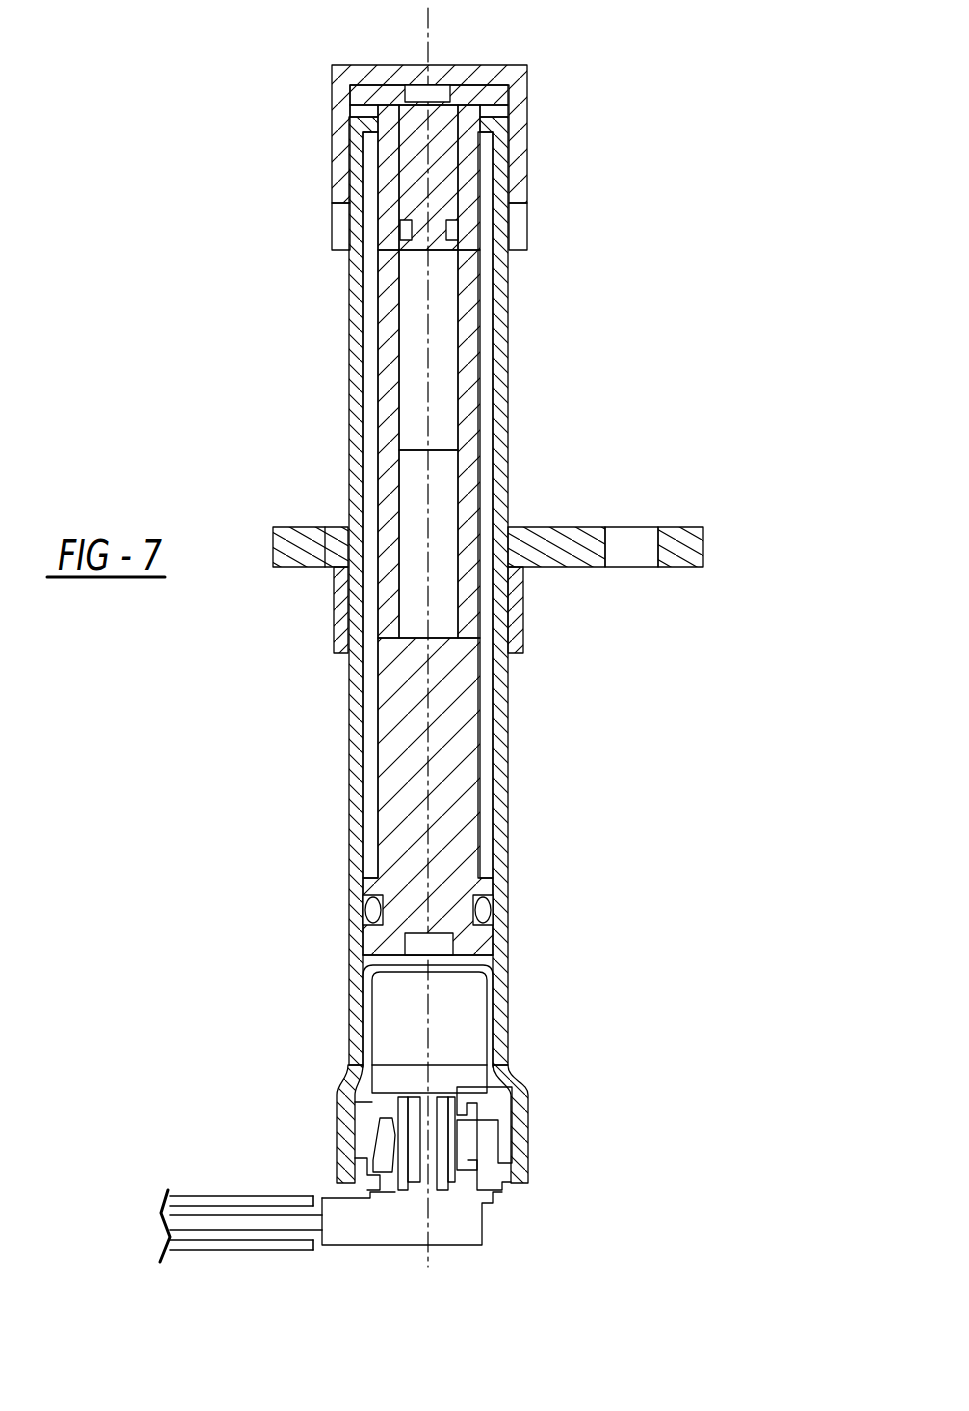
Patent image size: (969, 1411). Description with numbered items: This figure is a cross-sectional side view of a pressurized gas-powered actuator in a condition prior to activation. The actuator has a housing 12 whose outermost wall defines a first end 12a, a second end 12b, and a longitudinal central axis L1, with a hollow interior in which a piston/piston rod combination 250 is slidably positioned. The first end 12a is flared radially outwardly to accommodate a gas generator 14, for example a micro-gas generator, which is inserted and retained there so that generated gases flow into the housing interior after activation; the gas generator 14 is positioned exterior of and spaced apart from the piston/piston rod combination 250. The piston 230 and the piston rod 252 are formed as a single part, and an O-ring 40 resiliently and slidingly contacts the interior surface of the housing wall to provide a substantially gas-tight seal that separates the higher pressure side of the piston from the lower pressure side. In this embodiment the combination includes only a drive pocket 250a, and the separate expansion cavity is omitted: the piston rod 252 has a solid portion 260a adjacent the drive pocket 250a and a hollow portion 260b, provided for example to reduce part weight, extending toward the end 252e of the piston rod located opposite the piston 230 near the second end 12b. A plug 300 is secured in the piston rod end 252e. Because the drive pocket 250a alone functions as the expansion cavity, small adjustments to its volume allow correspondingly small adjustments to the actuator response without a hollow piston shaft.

The longitudinal central axis L1 is at (428, 23).
The plug 300 is at (412, 153).
The second end 12b is at (355, 167).
The end of the piston rod 252e is at (385, 200).
The hollow portion 260b is at (445, 388).
The solid portion 260a is at (452, 665).
The piston/piston rod combination 250 is at (438, 708).
The housing 12 is at (355, 743).
The piston rod 252 is at (438, 807).
The O-ring 40 is at (372, 903).
The piston 230 is at (478, 942).
The drive pocket 250a is at (405, 945).
The first end 12a is at (335, 1130).
The gas generator 14 is at (470, 1050).